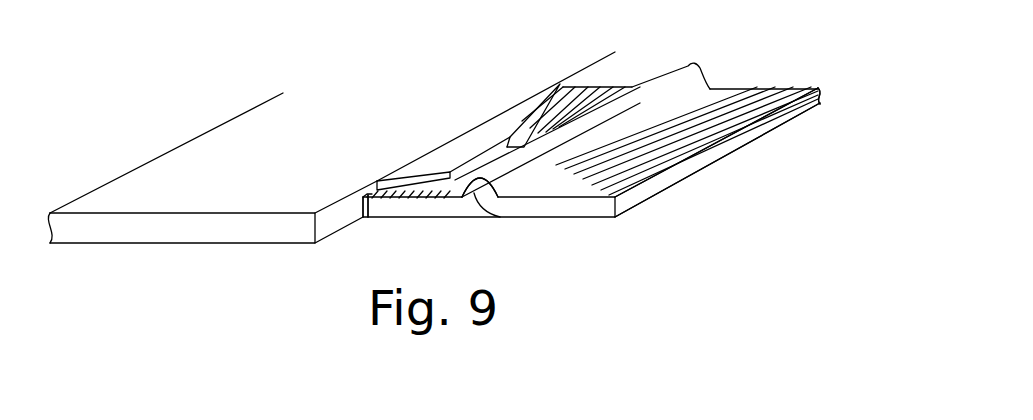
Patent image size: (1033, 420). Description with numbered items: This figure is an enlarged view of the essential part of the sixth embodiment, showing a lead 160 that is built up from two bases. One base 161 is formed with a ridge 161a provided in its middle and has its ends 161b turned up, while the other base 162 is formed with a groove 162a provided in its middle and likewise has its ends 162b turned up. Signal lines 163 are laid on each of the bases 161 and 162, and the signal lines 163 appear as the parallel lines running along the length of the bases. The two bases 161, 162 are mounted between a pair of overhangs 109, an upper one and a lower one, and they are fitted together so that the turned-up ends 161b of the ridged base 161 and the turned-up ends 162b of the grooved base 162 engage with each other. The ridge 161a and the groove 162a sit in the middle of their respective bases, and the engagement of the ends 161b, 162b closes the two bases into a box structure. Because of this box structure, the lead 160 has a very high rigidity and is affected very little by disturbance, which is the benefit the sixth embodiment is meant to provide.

The overhang 109 is at (478, 140).
The lead 160 is at (744, 180).
The base 161 is at (654, 106).
The ridge 161a is at (675, 90).
The ends 161b is at (783, 117).
The base 162 is at (591, 184).
The groove 162a is at (481, 205).
The ends 162b is at (373, 202).
The signal lines 163 is at (592, 87).